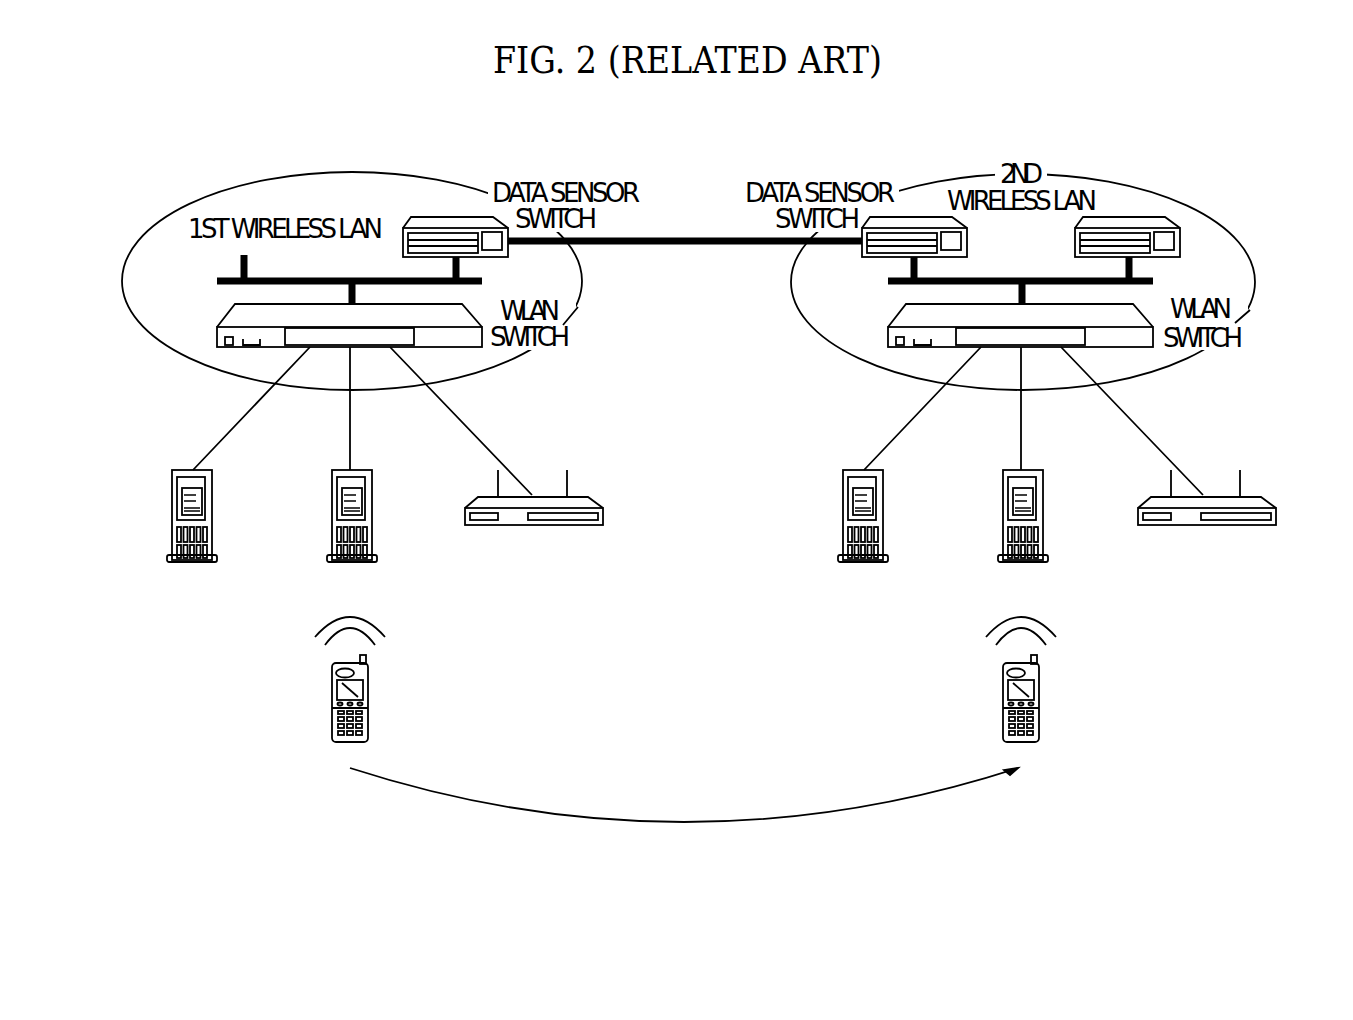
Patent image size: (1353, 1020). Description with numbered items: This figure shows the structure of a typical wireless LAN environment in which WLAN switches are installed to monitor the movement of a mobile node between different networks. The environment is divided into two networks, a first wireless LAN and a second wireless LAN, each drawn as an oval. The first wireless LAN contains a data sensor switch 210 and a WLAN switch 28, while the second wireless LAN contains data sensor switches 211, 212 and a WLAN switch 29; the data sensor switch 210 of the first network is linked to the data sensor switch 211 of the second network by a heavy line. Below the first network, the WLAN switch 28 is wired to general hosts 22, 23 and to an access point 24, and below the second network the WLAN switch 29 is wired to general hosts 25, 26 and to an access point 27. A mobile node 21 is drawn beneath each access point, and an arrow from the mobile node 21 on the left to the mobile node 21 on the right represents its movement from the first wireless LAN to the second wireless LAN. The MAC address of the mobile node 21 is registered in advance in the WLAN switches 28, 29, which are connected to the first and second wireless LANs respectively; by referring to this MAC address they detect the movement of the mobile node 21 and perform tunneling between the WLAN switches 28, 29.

The mobile node 21 is at (367, 705).
The general host 22 is at (213, 512).
The general host 23 is at (372, 512).
The access point 24 is at (513, 525).
The server 25 is at (884, 512).
The general host 26 is at (1043, 512).
The access point 27 is at (1186, 525).
The WLAN switch 28 is at (227, 313).
The WLAN switch 29 is at (898, 313).
The data sensor switch 210 is at (438, 217).
The data sensor switch 211 is at (915, 218).
The data sensor switch 212 is at (1127, 218).